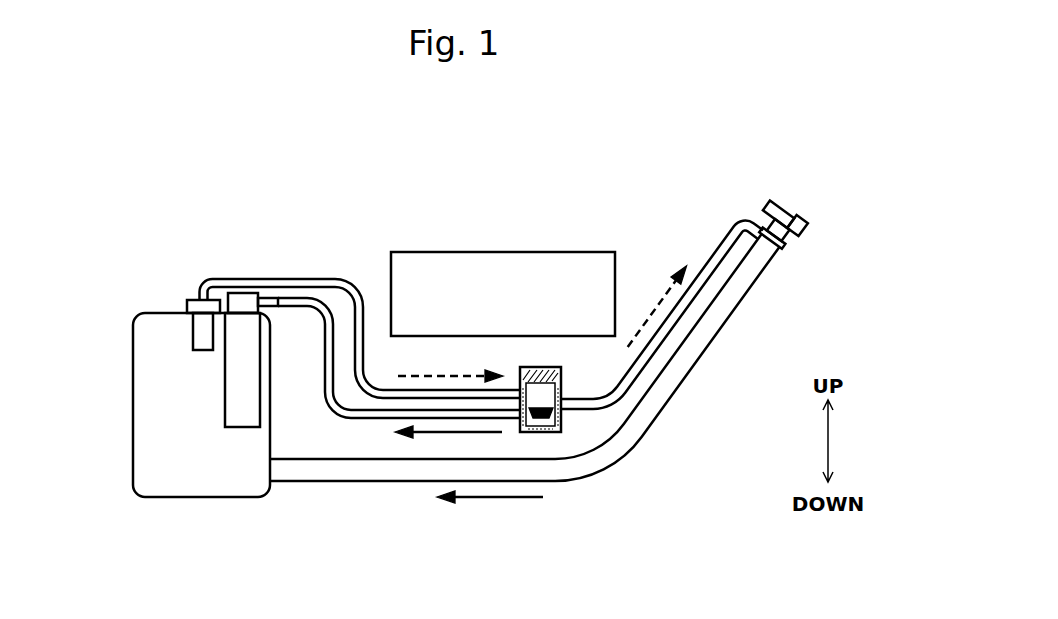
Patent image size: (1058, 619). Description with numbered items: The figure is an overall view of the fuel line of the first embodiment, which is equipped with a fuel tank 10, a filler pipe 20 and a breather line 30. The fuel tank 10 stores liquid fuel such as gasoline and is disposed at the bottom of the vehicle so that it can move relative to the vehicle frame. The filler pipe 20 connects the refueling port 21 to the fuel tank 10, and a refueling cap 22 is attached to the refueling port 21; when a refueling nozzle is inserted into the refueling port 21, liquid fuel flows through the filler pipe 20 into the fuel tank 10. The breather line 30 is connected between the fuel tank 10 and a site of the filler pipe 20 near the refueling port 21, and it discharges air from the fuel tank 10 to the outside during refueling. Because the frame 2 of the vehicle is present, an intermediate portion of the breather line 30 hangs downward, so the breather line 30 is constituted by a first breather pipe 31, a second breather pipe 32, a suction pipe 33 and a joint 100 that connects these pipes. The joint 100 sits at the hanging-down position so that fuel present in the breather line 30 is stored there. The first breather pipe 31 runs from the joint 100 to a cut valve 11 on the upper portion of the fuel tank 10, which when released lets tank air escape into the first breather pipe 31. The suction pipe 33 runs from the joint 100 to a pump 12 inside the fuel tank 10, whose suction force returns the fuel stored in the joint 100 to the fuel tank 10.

The frame 2 is at (487, 252).
The fuel tank 10 is at (170, 498).
The cut valve 11 is at (192, 337).
The pump 12 is at (225, 405).
The filler pipe 20 is at (668, 407).
The refueling port 21 is at (800, 213).
The refueling cap 22 is at (777, 202).
The breather line 30 is at (470, 352).
The first breather pipe 31 is at (333, 279).
The second breather pipe 32 is at (717, 240).
The suction pipe 33 is at (297, 297).
The joint 100 is at (551, 448).